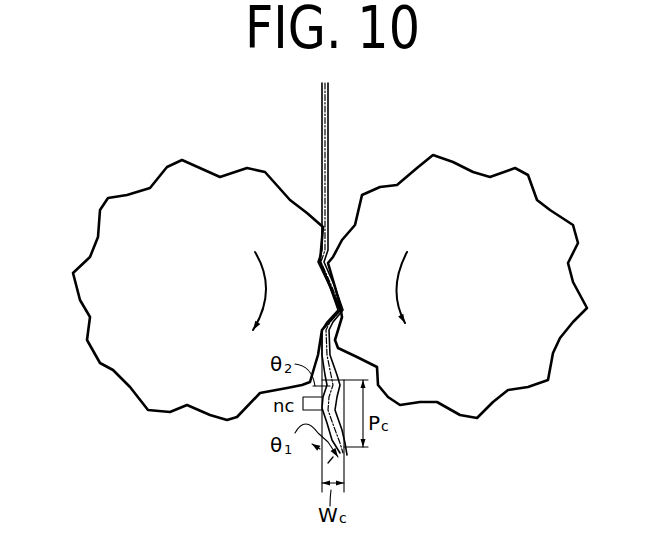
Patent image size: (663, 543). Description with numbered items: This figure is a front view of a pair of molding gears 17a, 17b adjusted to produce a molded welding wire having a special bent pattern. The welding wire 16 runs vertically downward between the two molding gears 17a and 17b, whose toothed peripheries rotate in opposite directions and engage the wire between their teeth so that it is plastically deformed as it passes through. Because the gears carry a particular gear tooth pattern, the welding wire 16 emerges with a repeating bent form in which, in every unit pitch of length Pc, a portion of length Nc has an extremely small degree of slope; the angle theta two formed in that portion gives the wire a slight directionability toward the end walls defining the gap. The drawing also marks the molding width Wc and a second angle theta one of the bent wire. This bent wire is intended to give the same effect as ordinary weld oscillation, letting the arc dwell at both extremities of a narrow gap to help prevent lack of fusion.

The welding wire 16 is at (327, 142).
The molding gear 17a is at (473, 182).
The molding gear 17b is at (200, 177).